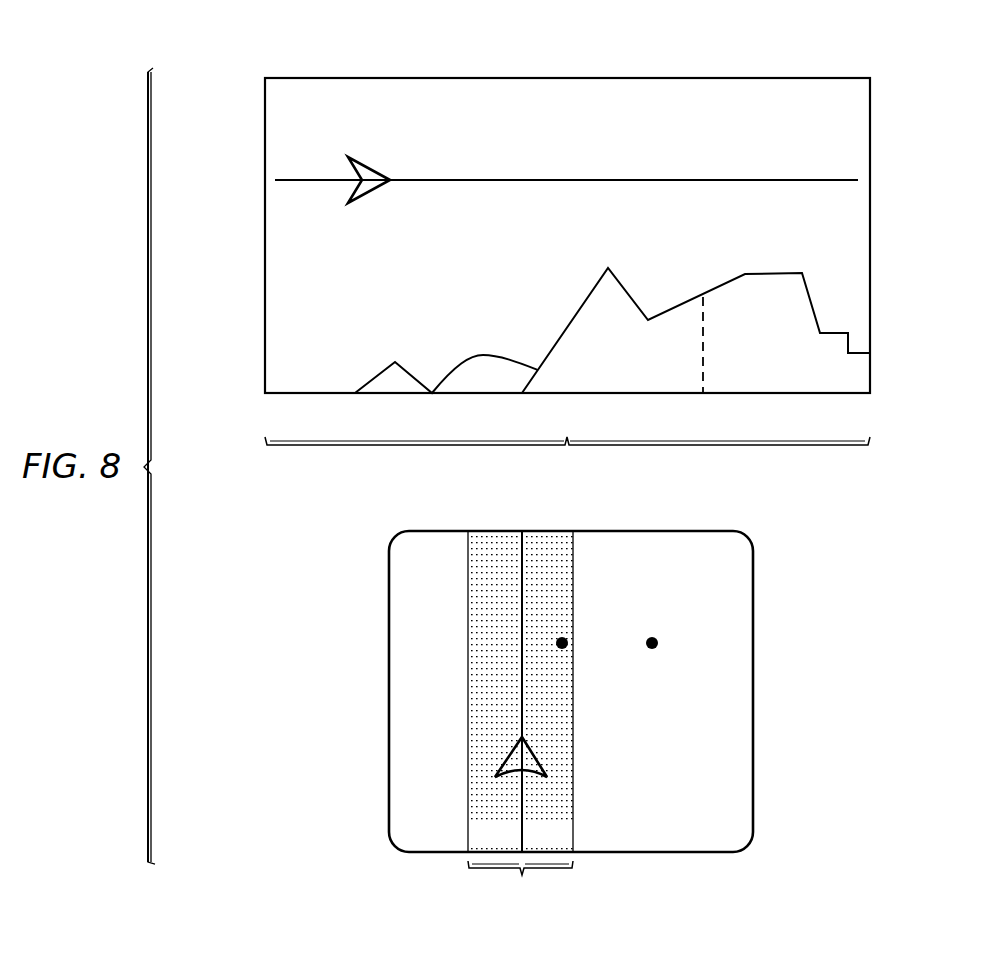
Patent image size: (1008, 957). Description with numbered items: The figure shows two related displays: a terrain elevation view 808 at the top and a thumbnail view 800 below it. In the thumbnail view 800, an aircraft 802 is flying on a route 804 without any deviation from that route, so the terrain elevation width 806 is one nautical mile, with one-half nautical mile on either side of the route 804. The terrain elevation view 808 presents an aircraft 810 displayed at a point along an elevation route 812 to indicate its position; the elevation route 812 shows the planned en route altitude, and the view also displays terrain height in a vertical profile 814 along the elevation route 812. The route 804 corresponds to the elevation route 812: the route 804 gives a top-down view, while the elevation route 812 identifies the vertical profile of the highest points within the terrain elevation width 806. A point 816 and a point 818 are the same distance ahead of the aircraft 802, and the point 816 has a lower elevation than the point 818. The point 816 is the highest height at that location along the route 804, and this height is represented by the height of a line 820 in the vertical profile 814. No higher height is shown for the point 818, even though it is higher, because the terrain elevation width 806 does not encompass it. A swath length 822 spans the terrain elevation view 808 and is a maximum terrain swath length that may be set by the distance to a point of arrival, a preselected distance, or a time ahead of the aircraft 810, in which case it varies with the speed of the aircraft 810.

The thumbnail view 800 is at (757, 635).
The aircraft 802 is at (528, 745).
The route 804 is at (523, 572).
The terrain elevation width 806 is at (520, 719).
The terrain elevation view 808 is at (728, 76).
The aircraft 810 is at (372, 167).
The elevation route 812 is at (537, 178).
The vertical profile 814 is at (628, 290).
The point 816 is at (567, 636).
The point 818 is at (655, 636).
The line 820 is at (706, 355).
The swath length 822 is at (567, 459).